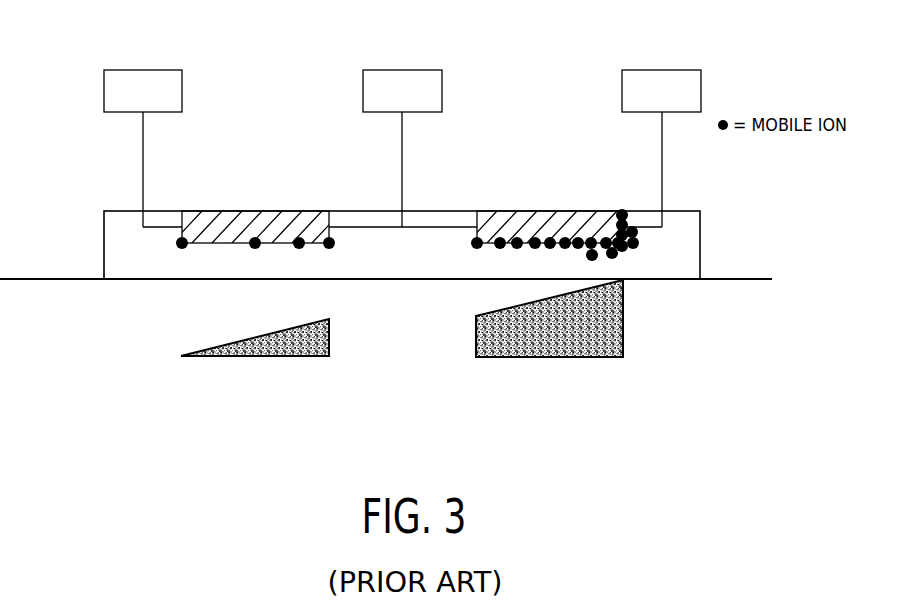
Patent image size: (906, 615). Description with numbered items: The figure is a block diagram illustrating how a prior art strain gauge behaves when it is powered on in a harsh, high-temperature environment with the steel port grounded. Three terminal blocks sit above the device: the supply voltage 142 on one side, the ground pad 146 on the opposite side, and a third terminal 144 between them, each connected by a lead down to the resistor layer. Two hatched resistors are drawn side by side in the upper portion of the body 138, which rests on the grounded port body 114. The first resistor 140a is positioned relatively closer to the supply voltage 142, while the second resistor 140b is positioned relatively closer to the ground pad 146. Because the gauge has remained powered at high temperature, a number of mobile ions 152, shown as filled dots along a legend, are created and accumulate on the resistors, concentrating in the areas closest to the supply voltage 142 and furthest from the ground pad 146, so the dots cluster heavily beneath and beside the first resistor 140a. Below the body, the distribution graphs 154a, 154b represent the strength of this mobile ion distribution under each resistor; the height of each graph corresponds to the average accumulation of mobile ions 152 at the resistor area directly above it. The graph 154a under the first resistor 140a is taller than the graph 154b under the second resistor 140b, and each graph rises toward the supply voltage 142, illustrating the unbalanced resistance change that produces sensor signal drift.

The port body 114 is at (52, 278).
The semiconductor substrate body 138 is at (692, 265).
The first resistor 140a is at (536, 212).
The second resistor 140b is at (247, 212).
The supply voltage 142 is at (662, 69).
The second voltage terminal 144 is at (403, 69).
The ground pad 146 is at (143, 69).
The mobile ions 152 is at (256, 248).
The mobile ion distribution graph of first resistor 154a is at (545, 345).
The mobile ion distribution graph of second resistor 154b is at (270, 344).